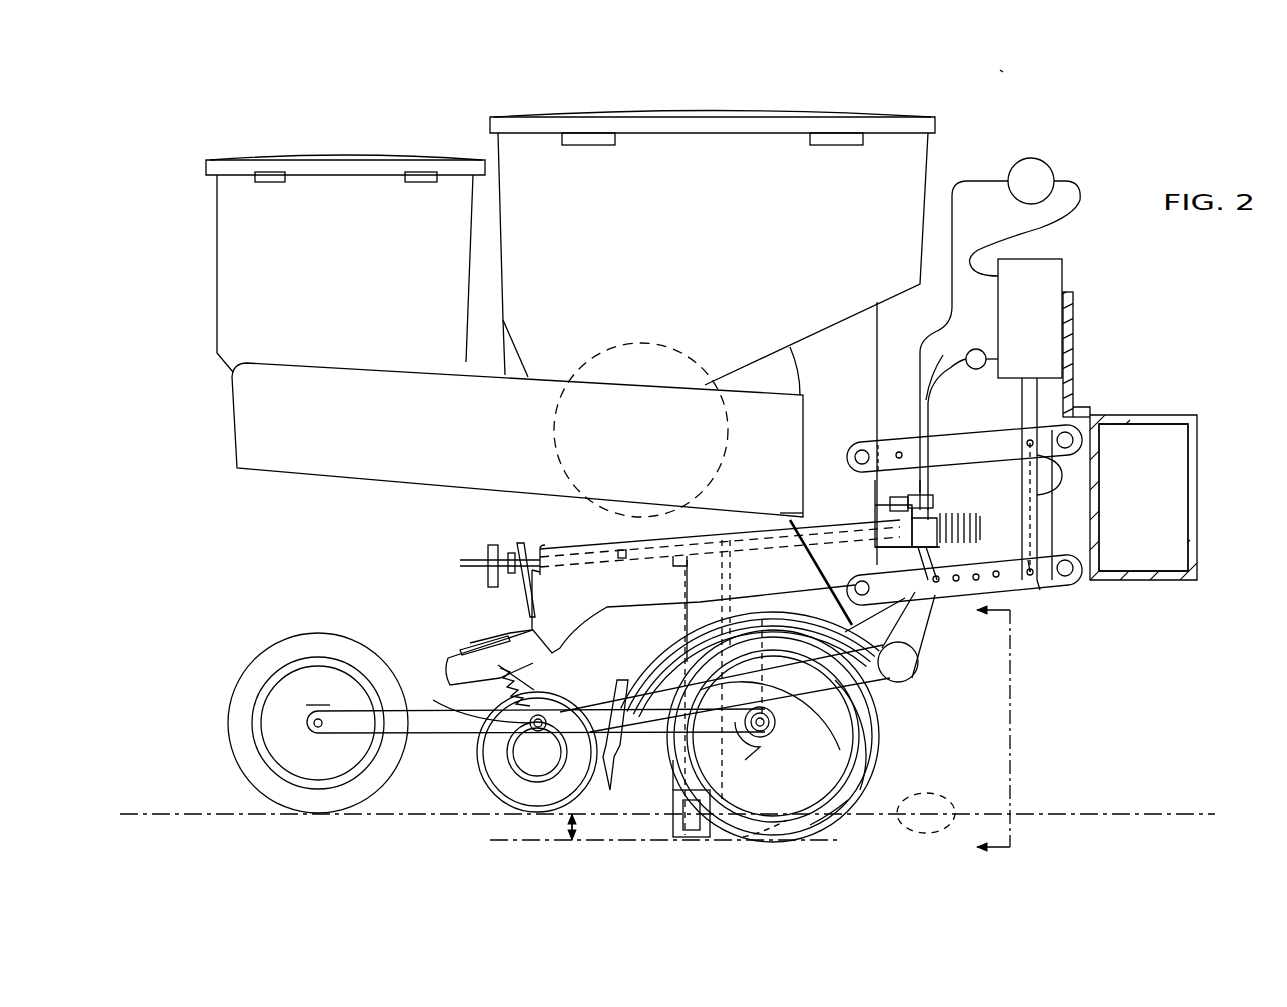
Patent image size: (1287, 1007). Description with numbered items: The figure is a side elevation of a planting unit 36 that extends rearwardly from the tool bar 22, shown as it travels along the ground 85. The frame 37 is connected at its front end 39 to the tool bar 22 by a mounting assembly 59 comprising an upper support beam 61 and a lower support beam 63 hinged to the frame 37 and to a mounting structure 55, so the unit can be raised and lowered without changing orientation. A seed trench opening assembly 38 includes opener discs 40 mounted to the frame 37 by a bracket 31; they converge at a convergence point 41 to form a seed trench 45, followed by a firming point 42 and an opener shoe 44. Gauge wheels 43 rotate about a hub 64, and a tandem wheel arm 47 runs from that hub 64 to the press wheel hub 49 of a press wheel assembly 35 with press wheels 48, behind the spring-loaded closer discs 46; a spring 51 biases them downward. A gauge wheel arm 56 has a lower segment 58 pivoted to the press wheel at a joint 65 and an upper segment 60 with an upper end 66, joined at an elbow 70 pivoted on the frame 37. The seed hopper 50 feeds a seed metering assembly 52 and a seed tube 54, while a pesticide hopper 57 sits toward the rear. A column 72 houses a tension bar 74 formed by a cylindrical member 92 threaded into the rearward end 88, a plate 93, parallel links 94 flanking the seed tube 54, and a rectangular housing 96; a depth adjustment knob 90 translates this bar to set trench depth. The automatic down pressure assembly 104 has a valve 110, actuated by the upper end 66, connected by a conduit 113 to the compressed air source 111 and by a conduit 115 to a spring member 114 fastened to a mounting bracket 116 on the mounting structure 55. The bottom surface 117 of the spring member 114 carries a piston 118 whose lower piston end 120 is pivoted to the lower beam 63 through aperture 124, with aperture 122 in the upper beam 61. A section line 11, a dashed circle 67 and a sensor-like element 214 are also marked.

The planting unit 36 is at (1000, 70).
The conduit 113 is at (990, 147).
The compressed air source 111 is at (1045, 168).
The spring member 114 is at (1068, 272).
The mounting bracket 116 is at (1075, 328).
The mounting assembly 59 is at (1104, 373).
The tool bar 22 is at (1165, 410).
The seed hopper 50 is at (712, 253).
The pesticide hopper 57 is at (345, 262).
The seed metering assembly 52 is at (695, 345).
The automatic down pressure assembly 104 is at (937, 314).
The sensor 214 is at (977, 348).
The conduit 115 is at (946, 369).
The bottom surface 117 is at (1007, 385).
The upper support beam 61 is at (960, 434).
The front end 39 is at (868, 396).
The piston 118 is at (1092, 490).
The mounting structure 55 is at (1080, 527).
The rectangular housing 96 is at (885, 520).
The valve 110 is at (932, 503).
The aperture 122 is at (1030, 462).
The aperture 124 is at (1028, 560).
The upper gauge wheel arm end 66 is at (920, 545).
The cylindrical member 92 is at (557, 553).
The frame 37 is at (617, 538).
The depth adjustment knob 90 is at (485, 562).
The rearward end 88 is at (537, 577).
The column 72 is at (565, 603).
The plate 93 is at (620, 556).
The seed tube 54 is at (683, 575).
The parallel links 94 is at (687, 562).
The tension bar 74 is at (758, 553).
The press wheel assembly 35 is at (257, 653).
The press wheel hub 49 is at (320, 716).
The joint 65 is at (638, 654).
The spring 51 is at (497, 685).
The tandem wheel arm 47 is at (440, 737).
The press wheel 48 is at (385, 790).
The seed-trench closer discs 46 is at (523, 793).
The seed trench opener discs 40 is at (608, 775).
The seed trench 45 is at (658, 843).
The opener shoe 44 is at (700, 838).
The seed trench firming point 42 is at (763, 827).
The convergence point 41 is at (820, 827).
The press wheel 67 is at (927, 833).
The ground 85 is at (1083, 817).
The seed trench opening assembly 38 is at (870, 792).
The gauge wheels 43 is at (840, 747).
The lower segment 58 is at (750, 681).
The bracket 31 is at (773, 736).
The gauge wheel hub 64 is at (743, 750).
The gauge wheel arm 56 is at (758, 668).
The elbow 70 is at (880, 677).
The upper segment 60 is at (930, 633).
The lower support beam 63 is at (1013, 603).
The lower piston end 120 is at (1037, 582).
The section line 11 is at (983, 732).